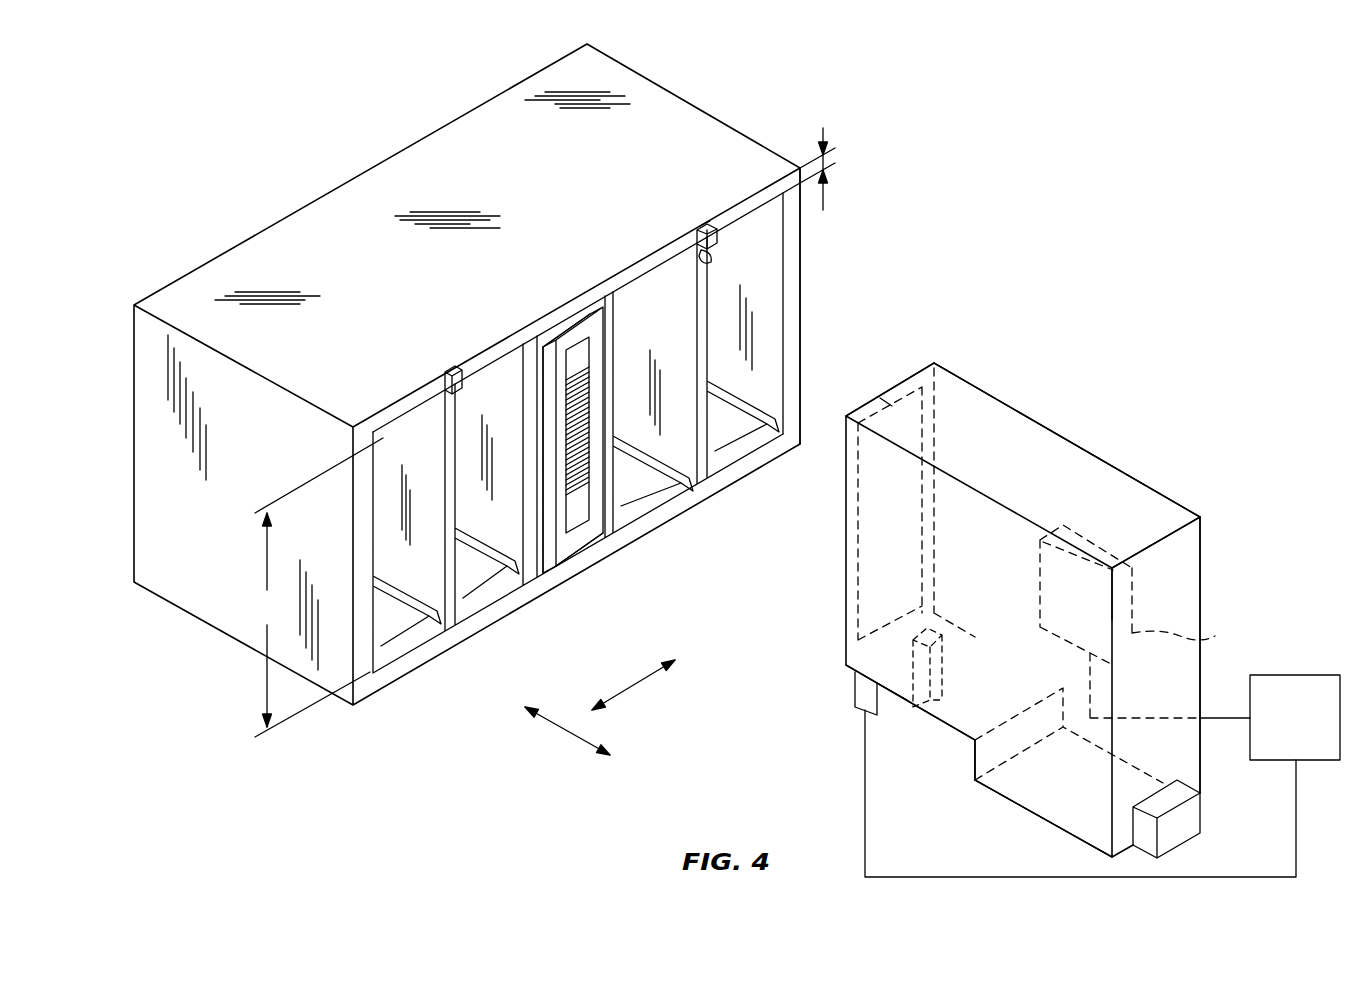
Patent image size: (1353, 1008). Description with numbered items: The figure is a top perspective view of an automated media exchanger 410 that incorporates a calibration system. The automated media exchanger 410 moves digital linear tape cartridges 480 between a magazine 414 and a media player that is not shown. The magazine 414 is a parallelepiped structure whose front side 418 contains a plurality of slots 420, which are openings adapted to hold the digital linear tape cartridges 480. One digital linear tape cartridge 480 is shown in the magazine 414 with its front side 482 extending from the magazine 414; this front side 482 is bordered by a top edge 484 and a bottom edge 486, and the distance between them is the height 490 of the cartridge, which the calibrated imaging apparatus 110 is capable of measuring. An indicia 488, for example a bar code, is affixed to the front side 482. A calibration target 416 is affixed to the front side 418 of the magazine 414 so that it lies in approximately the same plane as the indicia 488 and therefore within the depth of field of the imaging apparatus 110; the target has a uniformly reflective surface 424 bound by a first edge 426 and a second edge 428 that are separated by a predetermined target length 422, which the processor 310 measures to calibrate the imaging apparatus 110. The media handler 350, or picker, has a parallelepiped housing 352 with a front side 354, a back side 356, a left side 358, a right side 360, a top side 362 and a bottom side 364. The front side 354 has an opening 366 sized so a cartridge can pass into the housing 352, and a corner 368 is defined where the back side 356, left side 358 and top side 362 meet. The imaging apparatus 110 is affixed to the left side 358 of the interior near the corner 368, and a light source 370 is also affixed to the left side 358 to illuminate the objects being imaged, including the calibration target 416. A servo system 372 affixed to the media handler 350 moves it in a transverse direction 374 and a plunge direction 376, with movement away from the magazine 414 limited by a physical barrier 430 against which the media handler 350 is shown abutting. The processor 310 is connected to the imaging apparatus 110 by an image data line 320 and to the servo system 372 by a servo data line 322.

The automated media exchanger 410 is at (250, 146).
The magazine 414 is at (728, 85).
The calibration target 416 is at (703, 208).
The front side 418 is at (792, 323).
The slots 420 is at (790, 272).
The target length 422 is at (823, 133).
The surface 424 is at (696, 238).
The first edge 426 is at (699, 229).
The second edge 428 is at (712, 253).
The digital linear tape cartridge 480 is at (574, 325).
The front side 482 is at (556, 545).
The top edge 484 is at (550, 332).
The bottom edge 486 is at (598, 538).
The indicia 488 is at (576, 510).
The height 490 is at (313, 587).
The transverse direction 374 is at (633, 689).
The plunge direction 376 is at (566, 734).
The media handler 350 is at (1098, 366).
The housing 352 is at (1022, 438).
The front side 354 is at (918, 357).
The back side 356 is at (1188, 575).
The left side 358 is at (1020, 771).
The right side 360 is at (1120, 453).
The top side 362 is at (1163, 511).
The bottom side 364 is at (946, 745).
The opening 366 is at (887, 403).
The corner 368 is at (1115, 560).
The light source 370 is at (940, 661).
The servo system 372 is at (855, 707).
The servo data line 322 is at (865, 830).
The image data line 320 is at (1222, 727).
The processor 310 is at (1326, 673).
The physical barrier 430 is at (1192, 829).
The imaging apparatus 110 is at (1196, 638).